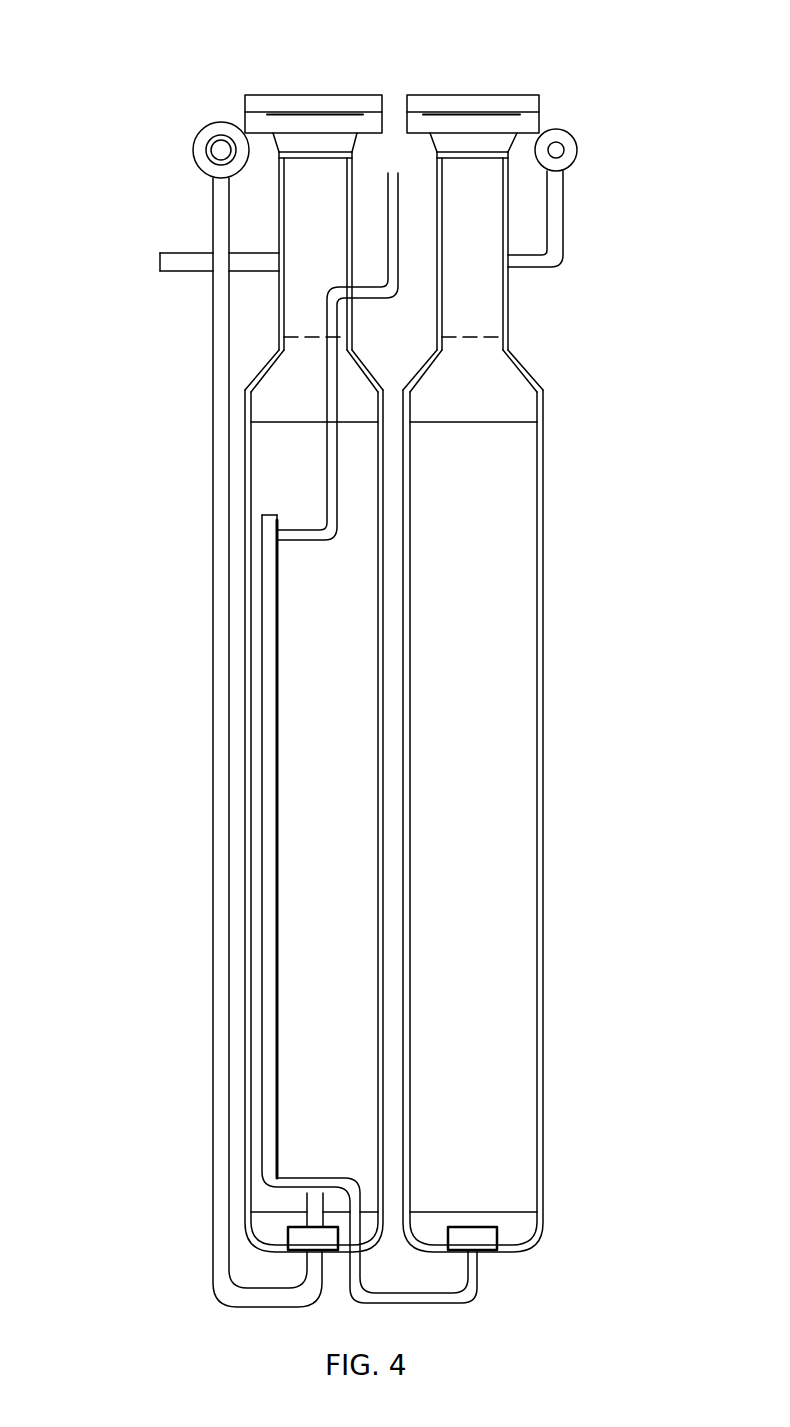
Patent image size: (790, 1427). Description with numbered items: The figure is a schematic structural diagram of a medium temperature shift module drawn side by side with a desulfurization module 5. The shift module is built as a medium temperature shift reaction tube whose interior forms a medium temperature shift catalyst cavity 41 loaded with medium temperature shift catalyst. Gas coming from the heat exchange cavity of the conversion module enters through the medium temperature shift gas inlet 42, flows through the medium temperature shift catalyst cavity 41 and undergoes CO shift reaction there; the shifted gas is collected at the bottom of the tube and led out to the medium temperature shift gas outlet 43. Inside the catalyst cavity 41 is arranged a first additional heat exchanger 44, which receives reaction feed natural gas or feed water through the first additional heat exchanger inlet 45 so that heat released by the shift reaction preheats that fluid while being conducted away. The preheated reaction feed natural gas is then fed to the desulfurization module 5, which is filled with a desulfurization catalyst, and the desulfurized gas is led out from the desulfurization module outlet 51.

The medium temperature shift catalyst cavity 41 is at (278, 478).
The desulfurization module 5 is at (503, 746).
The medium temperature shift gas inlet 42 is at (158, 262).
The medium temperature shift gas outlet 43 is at (222, 152).
The first additional heat exchanger 44 is at (270, 655).
The first additional heat exchanger inlet 45 is at (392, 172).
The desulfurization module outlet 51 is at (556, 152).